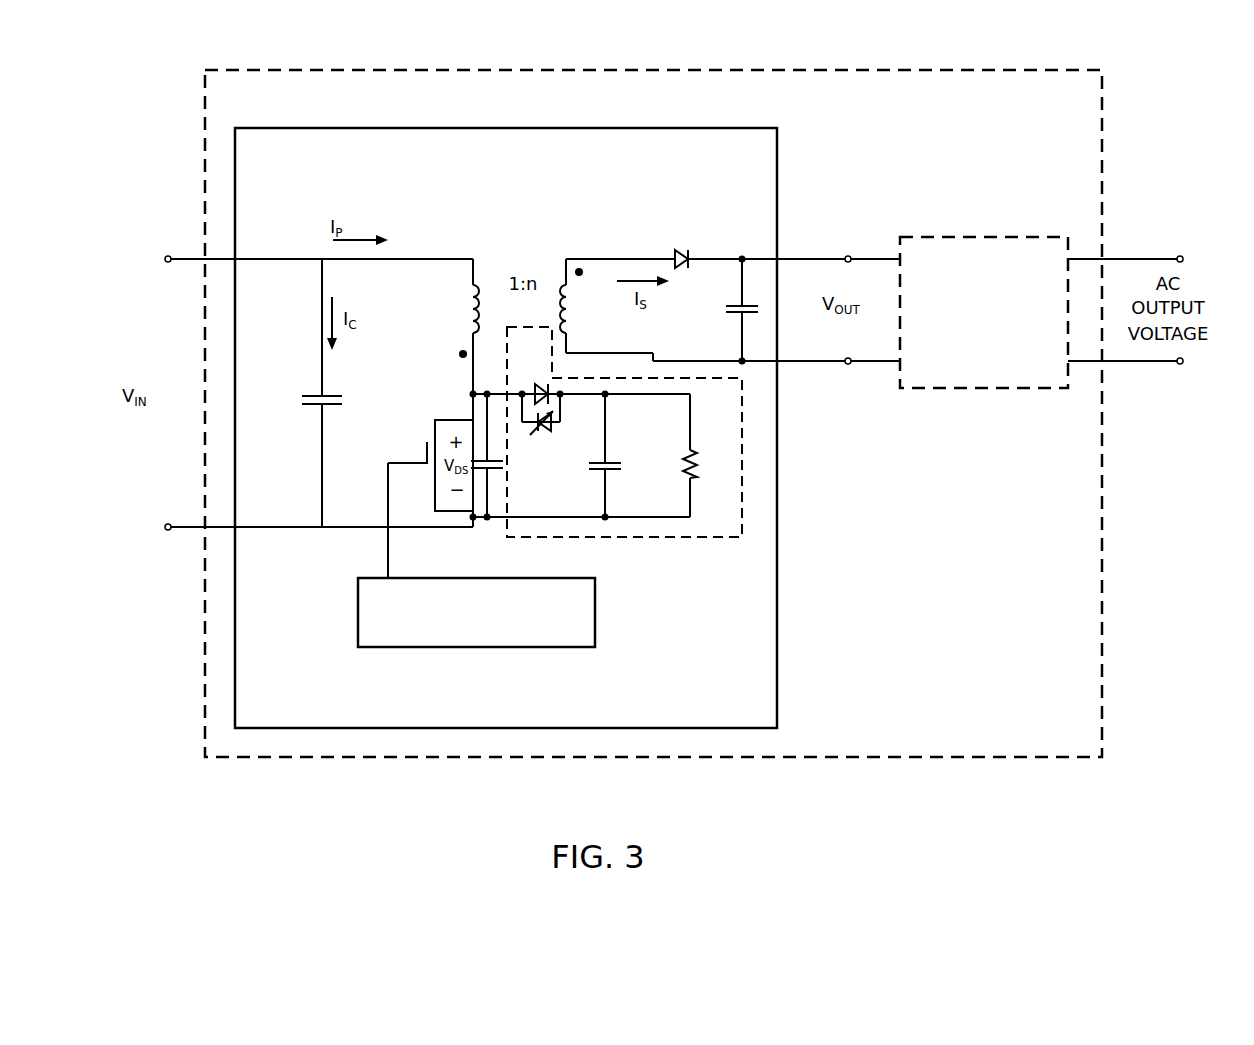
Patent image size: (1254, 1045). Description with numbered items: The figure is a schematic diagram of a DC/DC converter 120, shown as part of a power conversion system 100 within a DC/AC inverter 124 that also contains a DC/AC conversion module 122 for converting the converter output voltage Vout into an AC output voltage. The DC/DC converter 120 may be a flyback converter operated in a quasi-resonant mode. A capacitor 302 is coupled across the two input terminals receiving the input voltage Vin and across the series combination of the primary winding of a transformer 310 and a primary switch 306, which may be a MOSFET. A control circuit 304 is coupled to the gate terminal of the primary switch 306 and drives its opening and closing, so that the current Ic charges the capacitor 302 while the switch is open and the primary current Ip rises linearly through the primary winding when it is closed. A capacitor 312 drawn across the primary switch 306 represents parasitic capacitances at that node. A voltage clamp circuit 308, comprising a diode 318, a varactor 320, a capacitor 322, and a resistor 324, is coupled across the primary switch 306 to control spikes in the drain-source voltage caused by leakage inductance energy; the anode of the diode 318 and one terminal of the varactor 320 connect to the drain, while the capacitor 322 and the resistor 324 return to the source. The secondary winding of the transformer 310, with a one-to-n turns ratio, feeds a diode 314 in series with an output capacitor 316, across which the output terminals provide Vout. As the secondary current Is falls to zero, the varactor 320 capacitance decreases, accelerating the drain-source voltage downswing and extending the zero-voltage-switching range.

The power conversion system 100 is at (657, 57).
The DC/AC inverter 124 is at (970, 70).
The DC/DC converter 120 is at (777, 597).
The DC/AC conversion module 122 is at (966, 362).
The capacitor 302 is at (313, 392).
The control circuit 304 is at (595, 627).
The primary switch 306 is at (430, 436).
The voltage clamp circuit 308 is at (658, 538).
The transformer 310 is at (527, 262).
The capacitor 312 is at (492, 470).
The diode 314 is at (697, 250).
The output capacitor 316 is at (733, 318).
The diode 318 is at (548, 382).
The varactor 320 is at (551, 432).
The capacitor 322 is at (613, 457).
The resistor 324 is at (702, 465).